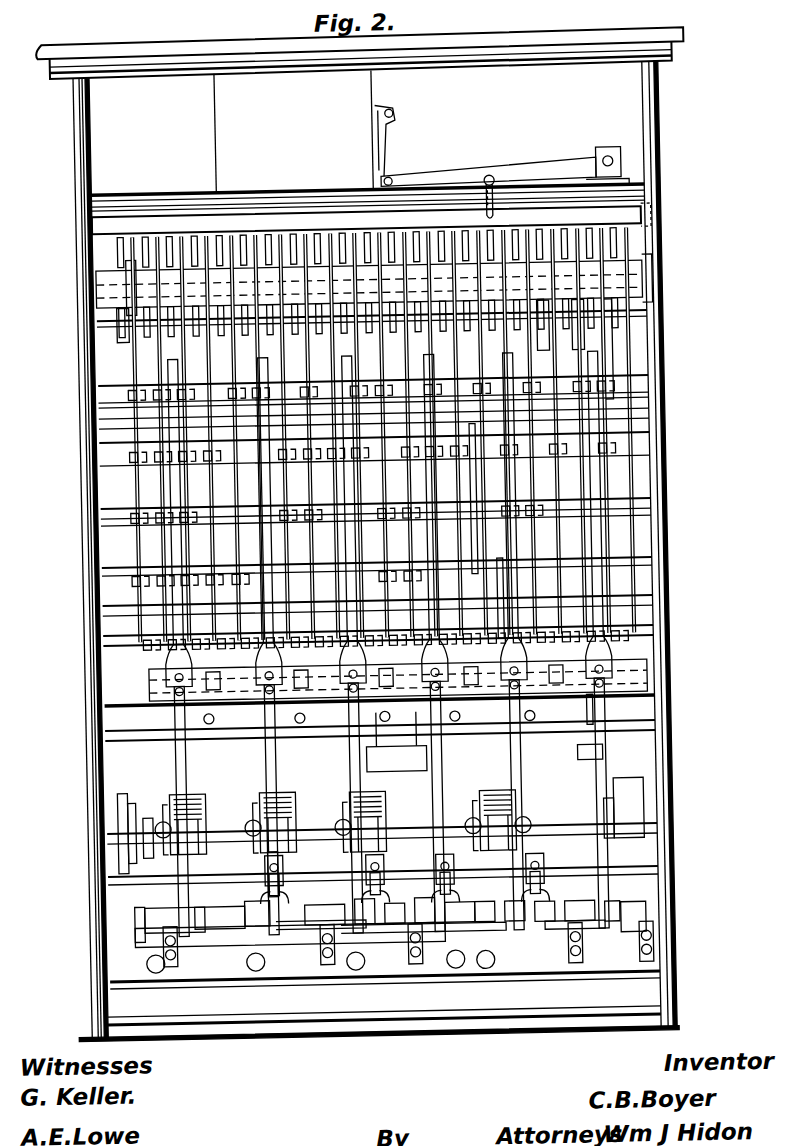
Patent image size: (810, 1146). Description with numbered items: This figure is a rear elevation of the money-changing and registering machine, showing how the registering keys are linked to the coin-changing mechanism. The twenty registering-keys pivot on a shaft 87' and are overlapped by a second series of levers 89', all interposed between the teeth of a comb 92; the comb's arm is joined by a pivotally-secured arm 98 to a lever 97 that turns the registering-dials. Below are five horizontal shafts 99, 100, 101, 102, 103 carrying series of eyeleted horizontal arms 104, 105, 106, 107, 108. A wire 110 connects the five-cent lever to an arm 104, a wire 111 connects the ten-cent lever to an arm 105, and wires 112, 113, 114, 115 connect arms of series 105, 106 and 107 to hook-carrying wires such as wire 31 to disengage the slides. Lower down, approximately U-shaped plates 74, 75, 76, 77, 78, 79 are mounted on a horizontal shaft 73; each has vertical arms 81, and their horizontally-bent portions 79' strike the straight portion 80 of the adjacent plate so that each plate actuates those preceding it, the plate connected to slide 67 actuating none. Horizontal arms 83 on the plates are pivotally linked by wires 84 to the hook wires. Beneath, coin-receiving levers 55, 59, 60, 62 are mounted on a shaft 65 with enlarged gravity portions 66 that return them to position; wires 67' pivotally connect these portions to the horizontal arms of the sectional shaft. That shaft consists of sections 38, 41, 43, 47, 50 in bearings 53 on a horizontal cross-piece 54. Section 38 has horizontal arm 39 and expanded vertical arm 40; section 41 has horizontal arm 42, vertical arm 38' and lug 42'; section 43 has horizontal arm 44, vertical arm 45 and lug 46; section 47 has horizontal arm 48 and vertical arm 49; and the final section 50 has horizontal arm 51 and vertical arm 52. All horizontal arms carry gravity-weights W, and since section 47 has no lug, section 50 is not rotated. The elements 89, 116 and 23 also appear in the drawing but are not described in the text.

The lever 97 is at (502, 144).
The pivotally-secured arm 98 is at (498, 172).
The comb 92 is at (648, 224).
The vertical arms 81 is at (650, 283).
The shaft 87' is at (403, 323).
The slide 89 is at (87, 302).
The levers 89' is at (526, 330).
The wire 111 is at (597, 348).
The wire 110 is at (612, 384).
The shaft 99 is at (656, 389).
The horizontal arms 104 is at (180, 390).
The shaft 100 is at (656, 446).
The horizontal arms 105 is at (180, 454).
The shaft 101 is at (602, 502).
The horizontal arms 106 is at (180, 514).
The wire 112 is at (492, 548).
The shaft 102 is at (657, 563).
The horizontal arms 107 is at (180, 574).
The wire 114 is at (496, 597).
The shaft 103 is at (602, 618).
The wires 84 is at (182, 620).
The horizontal arms 108 is at (192, 645).
The horizontally-bent portions 79' is at (395, 663).
The horizontal shaft 73 is at (652, 684).
The horizontal arms 83 is at (352, 713).
The plate 74 is at (207, 697).
The plate 75 is at (299, 698).
The plate 76 is at (384, 698).
The plate 77 is at (454, 699).
The plate 78 is at (529, 700).
The straight portion 80 is at (587, 711).
The plate 79 is at (613, 639).
The lever 55 is at (167, 730).
The shaft 65 is at (605, 749).
The lever 59 is at (170, 800).
The lever 60 is at (355, 783).
The wire 115 is at (378, 761).
The wire 113 is at (383, 797).
The lever 62 is at (523, 795).
The enlarged gravity portions 66 is at (185, 823).
The slide 67 is at (382, 863).
The rod 116 is at (289, 862).
The wires 67' is at (353, 894).
The wire 31 is at (192, 912).
The vertical arm 40 is at (291, 917).
The horizontal arm 39 is at (210, 943).
The gravity-weights W is at (317, 1049).
The section 47 is at (544, 919).
The bearings 53 is at (655, 924).
The horizontal cross-piece 54 is at (655, 964).
The section 38 is at (196, 987).
The horizontal arm 42 is at (232, 989).
The vertical arm 38' is at (312, 989).
The section 41 is at (348, 987).
The lug 42' is at (376, 994).
The section 43 is at (418, 987).
The horizontal arm 44 is at (453, 987).
The vertical arm 45 is at (468, 960).
The lug 46 is at (493, 988).
The horizontal arm 48 is at (553, 988).
The vertical arm 49 is at (528, 988).
The horizontal arm 51 is at (583, 989).
The vertical arm 52 is at (603, 989).
The section 50 is at (623, 989).
The frame 23 is at (445, 1135).